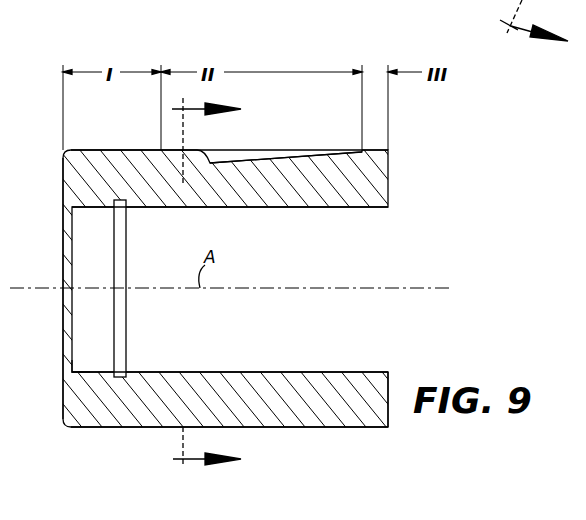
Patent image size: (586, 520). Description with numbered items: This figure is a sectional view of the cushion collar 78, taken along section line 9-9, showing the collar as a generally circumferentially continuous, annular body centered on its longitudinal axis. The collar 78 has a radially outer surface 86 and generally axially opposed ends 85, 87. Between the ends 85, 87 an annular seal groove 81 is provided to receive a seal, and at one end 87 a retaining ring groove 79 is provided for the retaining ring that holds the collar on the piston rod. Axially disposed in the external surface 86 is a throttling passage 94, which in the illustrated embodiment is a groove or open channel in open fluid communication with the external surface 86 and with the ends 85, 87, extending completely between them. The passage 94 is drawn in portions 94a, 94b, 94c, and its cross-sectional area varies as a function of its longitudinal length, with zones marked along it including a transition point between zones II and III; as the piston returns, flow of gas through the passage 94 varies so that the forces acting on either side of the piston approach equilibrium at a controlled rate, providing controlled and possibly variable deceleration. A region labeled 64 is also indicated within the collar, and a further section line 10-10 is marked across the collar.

The cushion collar 78 is at (285, 42).
The throttling passage 94 is at (190, 140).
The first surface portion 94a is at (125, 138).
The tapered surface portion 94b is at (261, 150).
The third surface portion 94c is at (376, 132).
The annular seal groove 81 is at (122, 253).
The retaining ring groove 79 is at (63, 330).
The end 87 is at (68, 372).
The radially outer surface 86 is at (125, 428).
The end 85 is at (390, 372).
The bore 64 is at (254, 334).
The section line 10- 10 is at (226, 286).
The section line 9- 9 is at (543, 28).